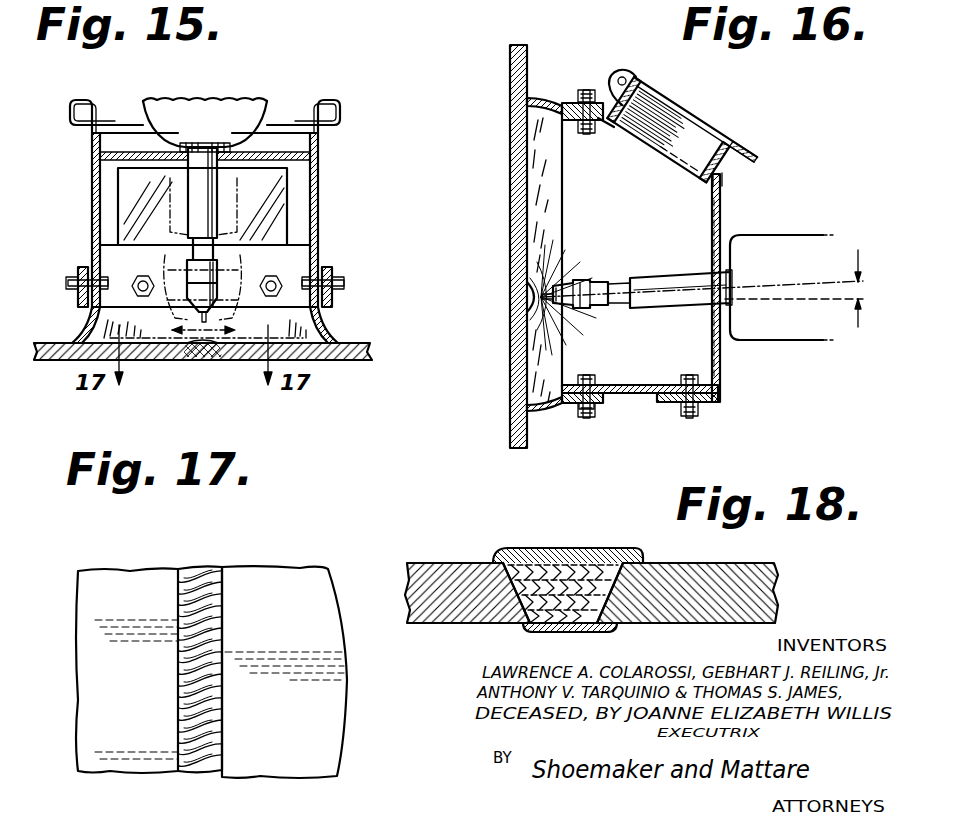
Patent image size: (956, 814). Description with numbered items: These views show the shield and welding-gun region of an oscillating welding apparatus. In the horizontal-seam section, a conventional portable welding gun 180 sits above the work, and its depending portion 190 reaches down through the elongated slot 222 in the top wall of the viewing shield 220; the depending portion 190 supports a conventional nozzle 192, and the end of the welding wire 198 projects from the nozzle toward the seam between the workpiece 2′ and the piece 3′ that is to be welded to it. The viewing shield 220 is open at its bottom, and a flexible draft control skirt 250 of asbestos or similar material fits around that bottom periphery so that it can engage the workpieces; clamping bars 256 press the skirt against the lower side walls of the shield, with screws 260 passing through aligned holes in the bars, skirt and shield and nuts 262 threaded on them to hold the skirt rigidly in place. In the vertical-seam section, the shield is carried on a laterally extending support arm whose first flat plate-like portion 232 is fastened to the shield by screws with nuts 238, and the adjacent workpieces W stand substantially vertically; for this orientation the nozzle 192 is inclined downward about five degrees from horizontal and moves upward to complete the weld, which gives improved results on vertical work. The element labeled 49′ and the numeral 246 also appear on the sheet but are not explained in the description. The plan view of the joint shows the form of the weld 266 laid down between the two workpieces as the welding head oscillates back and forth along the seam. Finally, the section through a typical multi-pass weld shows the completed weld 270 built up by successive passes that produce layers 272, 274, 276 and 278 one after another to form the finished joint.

In FIG. 15, the workpiece 2′ is at (370, 353).
In FIG. 17, the workpiece 2′ is at (293, 755).
In FIG. 18, the workpiece 2′ is at (725, 627).
In FIG. 15, the piece 3′ is at (63, 346).
In FIG. 17, the piece 3′ is at (125, 715).
In FIG. 18, the piece 3′ is at (430, 626).
In FIG. 15, the support track/tube 49′ is at (318, 134).
In FIG. 16, the support track/tube 49′ is at (696, 120).
In FIG. 15, the portable welding gun 180 is at (271, 110).
In FIG. 16, the portable welding gun 180 is at (800, 231).
In FIG. 15, the depending portion 190 is at (217, 190).
In FIG. 16, the depending portion 190 is at (662, 280).
In FIG. 15, the nozzle 192 is at (222, 285).
In FIG. 16, the nozzle 192 is at (583, 283).
In FIG. 15, the welding wire 198 is at (205, 324).
In FIG. 16, the welding wire 198 is at (540, 298).
In FIG. 15, the viewing shield 220 is at (92, 185).
In FIG. 16, the viewing shield 220 is at (721, 196).
In FIG. 15, the elongated slot 222 is at (152, 160).
In FIG. 16, the elongated slot 222 is at (712, 316).
In FIG. 16, the flat plate-like portion 232 is at (719, 402).
In FIG. 16, the nuts 238 is at (690, 417).
In FIG. 15, the upper member 246 is at (348, 9).
In FIG. 15, the flexible draft control skirt 250 is at (332, 338).
In FIG. 16, the flexible draft control skirt 250 is at (548, 101).
In FIG. 16, the clamping bars 256 is at (598, 104).
In FIG. 15, the screws 260 is at (108, 283).
In FIG. 16, the screws 260 is at (590, 135).
In FIG. 15, the nuts 262 is at (76, 275).
In FIG. 16, the nuts 262 is at (580, 414).
In FIG. 17, the weld 266 is at (231, 683).
In FIG. 18, the completed weld 270 is at (500, 536).
In FIG. 18, the layer 272 is at (537, 632).
In FIG. 18, the layer 274 is at (609, 612).
In FIG. 18, the layer 276 is at (507, 580).
In FIG. 18, the layer 278 is at (580, 548).
In FIG. 16, the workpieces W is at (512, 186).